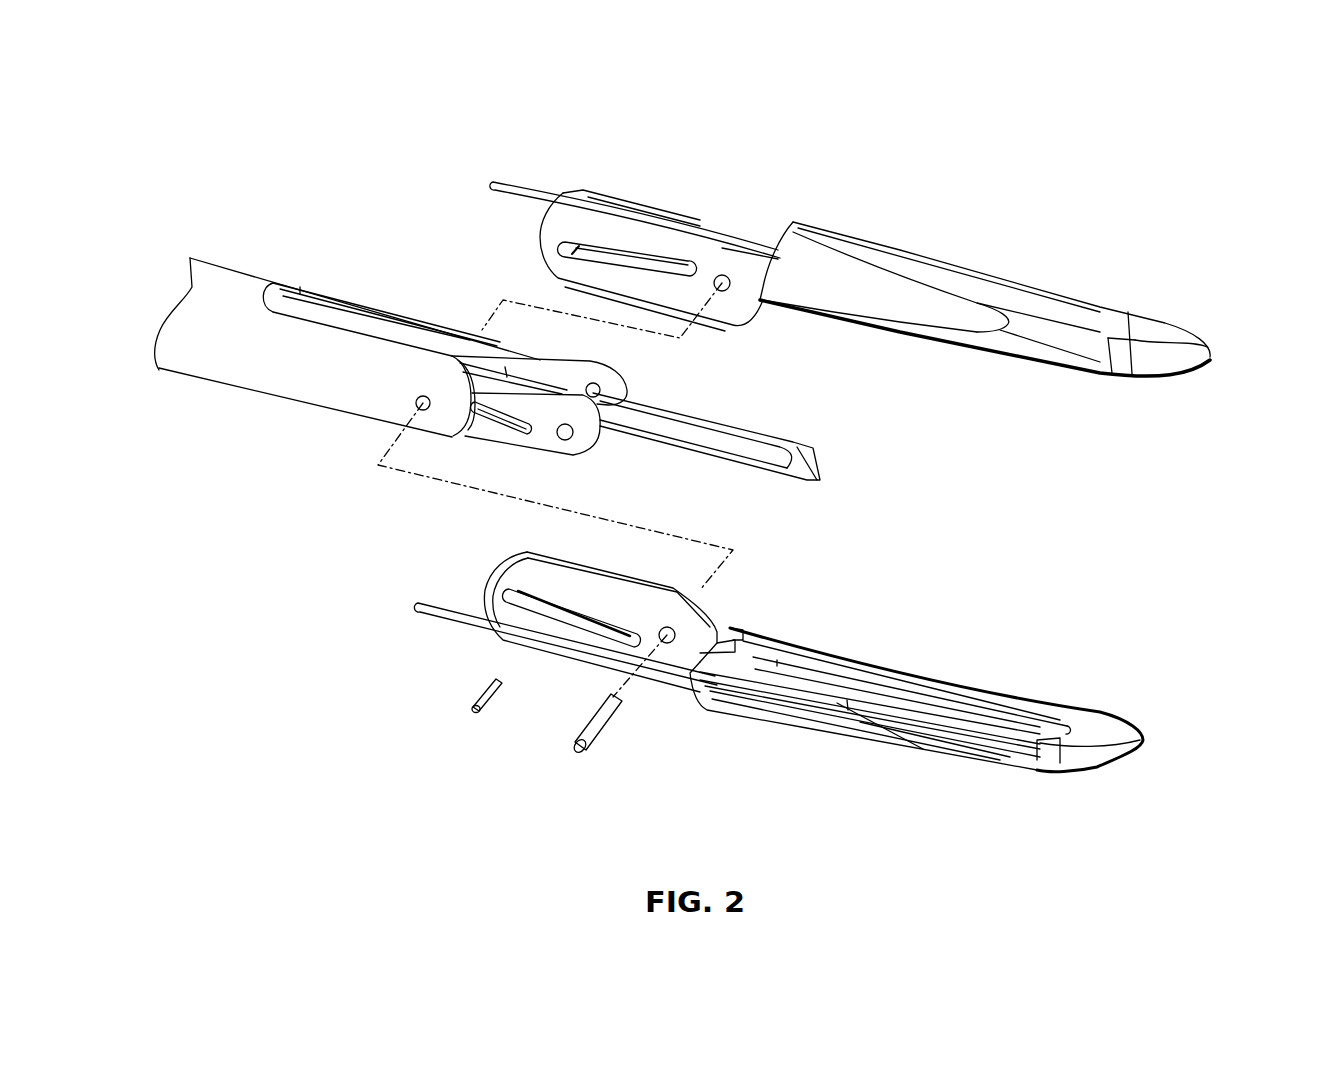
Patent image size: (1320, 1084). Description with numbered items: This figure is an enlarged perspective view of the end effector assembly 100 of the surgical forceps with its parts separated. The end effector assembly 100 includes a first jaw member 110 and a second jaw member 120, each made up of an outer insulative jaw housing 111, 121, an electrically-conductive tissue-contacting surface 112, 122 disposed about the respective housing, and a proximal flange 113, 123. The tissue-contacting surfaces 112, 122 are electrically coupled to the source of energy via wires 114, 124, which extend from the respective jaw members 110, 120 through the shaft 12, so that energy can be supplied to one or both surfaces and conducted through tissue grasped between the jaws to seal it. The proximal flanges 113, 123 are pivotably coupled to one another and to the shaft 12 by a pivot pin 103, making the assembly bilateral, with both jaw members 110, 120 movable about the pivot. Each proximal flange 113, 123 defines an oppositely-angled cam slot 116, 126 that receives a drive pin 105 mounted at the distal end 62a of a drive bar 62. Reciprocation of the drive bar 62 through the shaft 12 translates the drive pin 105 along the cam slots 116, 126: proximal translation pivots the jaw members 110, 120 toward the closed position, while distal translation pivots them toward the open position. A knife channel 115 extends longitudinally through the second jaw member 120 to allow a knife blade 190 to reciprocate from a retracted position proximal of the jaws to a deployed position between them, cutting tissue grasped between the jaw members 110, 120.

The end effector assembly 100 is at (945, 152).
The shaft 12 is at (325, 385).
The drive bar 62 is at (588, 356).
The distal end of drive bar 62a is at (568, 452).
The knife blade 190 is at (688, 420).
The first jaw member 110 is at (1126, 285).
The outer insulative jaw housing 111 is at (1170, 330).
The tissue-contacting surface 112 is at (1117, 378).
The proximal flange 113 is at (655, 210).
The wire 114 is at (510, 185).
The cam slot 116 is at (592, 253).
The second jaw member 120 is at (1096, 778).
The outer insulative jaw housing 121 is at (1013, 765).
The tissue-contacting surface 122 is at (1030, 722).
The proximal flange 123 is at (552, 552).
The wire 124 is at (416, 606).
The cam slot 126 is at (527, 603).
The knife channel 115 is at (905, 690).
The drive pin 105 is at (470, 713).
The pivot pin 103 is at (578, 748).